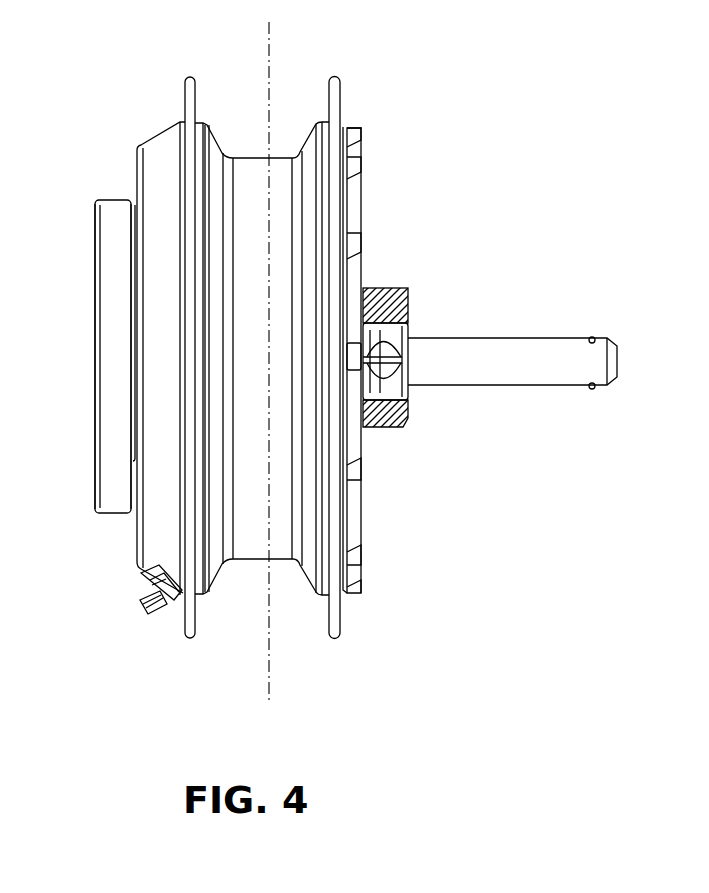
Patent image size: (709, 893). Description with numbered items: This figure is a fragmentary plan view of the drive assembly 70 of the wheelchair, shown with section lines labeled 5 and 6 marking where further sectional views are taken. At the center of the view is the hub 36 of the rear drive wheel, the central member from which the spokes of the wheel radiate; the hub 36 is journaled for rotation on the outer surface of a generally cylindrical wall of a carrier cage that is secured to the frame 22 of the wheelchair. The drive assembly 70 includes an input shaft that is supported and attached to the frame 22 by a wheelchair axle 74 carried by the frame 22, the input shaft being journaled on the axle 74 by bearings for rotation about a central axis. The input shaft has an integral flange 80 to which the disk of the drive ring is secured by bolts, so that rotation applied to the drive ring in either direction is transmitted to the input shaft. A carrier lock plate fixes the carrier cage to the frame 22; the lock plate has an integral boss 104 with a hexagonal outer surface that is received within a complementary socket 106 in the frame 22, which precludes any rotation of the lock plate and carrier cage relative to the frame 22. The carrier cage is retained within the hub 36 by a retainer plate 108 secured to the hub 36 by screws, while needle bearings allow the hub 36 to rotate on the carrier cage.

The section line 5- 5 is at (276, 27).
The section line 6- 6 is at (82, 370).
The frame 22 is at (407, 304).
The hub 36 is at (249, 167).
The drive assembly 70 is at (107, 190).
The wheelchair axle 74 is at (540, 372).
The integral flange 80 is at (116, 508).
The integral boss 104 is at (396, 376).
The socket 106 is at (381, 289).
The retainer plate 108 is at (363, 512).